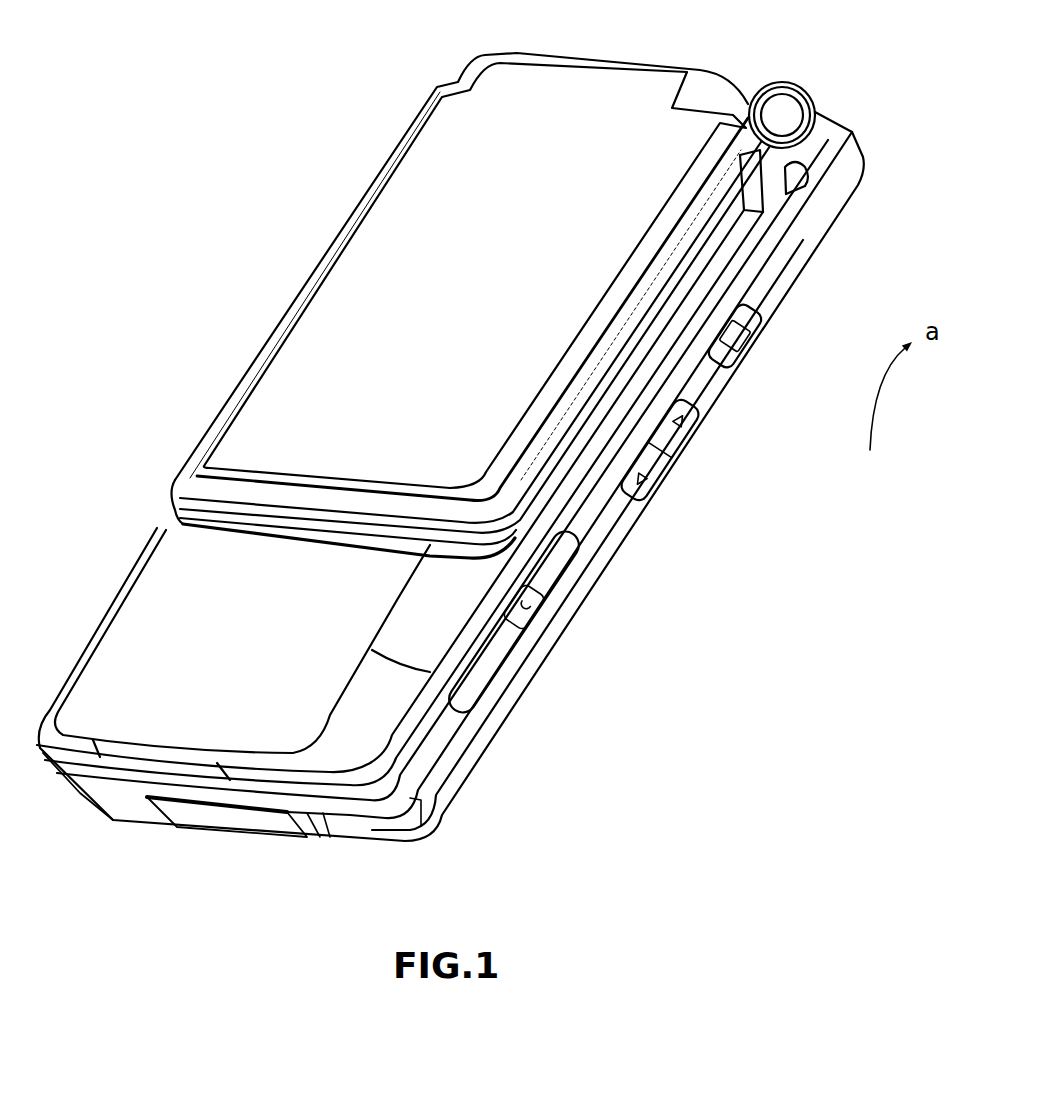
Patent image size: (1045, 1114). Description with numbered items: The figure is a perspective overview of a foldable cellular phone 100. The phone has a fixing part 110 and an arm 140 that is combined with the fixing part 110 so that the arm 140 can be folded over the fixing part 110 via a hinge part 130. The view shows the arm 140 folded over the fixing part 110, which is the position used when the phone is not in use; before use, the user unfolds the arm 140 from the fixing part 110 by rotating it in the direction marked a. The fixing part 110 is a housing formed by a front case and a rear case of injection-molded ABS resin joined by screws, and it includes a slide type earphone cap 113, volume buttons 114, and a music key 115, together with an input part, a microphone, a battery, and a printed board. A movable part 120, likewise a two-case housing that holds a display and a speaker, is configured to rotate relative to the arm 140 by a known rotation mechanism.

The cellular phone 100 is at (469, 431).
The fixing part 110 is at (795, 262).
The slide type earphone cap 113 is at (492, 662).
The volume buttons 114 is at (648, 465).
The music key 115 is at (732, 333).
The movable part 120 is at (382, 707).
The hinge part 130 is at (778, 103).
The arm 140 is at (310, 325).